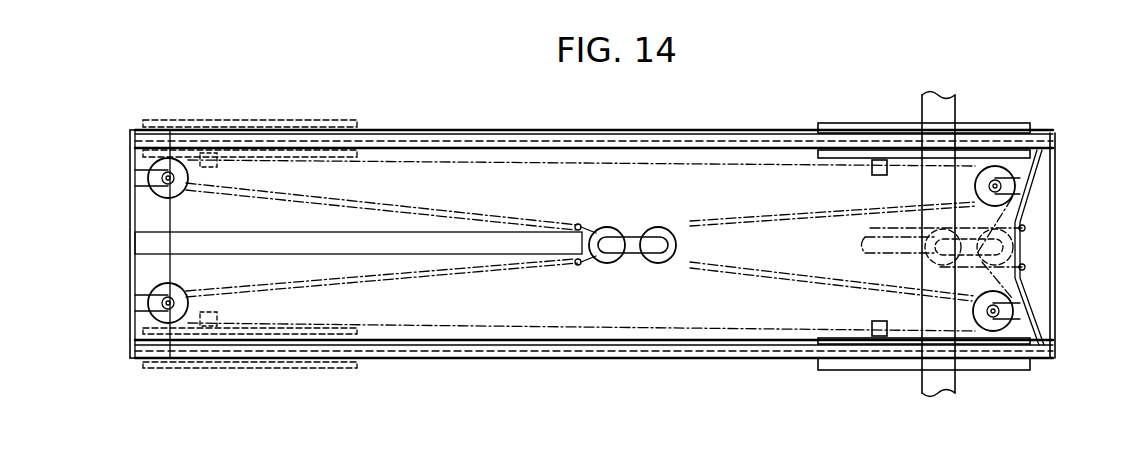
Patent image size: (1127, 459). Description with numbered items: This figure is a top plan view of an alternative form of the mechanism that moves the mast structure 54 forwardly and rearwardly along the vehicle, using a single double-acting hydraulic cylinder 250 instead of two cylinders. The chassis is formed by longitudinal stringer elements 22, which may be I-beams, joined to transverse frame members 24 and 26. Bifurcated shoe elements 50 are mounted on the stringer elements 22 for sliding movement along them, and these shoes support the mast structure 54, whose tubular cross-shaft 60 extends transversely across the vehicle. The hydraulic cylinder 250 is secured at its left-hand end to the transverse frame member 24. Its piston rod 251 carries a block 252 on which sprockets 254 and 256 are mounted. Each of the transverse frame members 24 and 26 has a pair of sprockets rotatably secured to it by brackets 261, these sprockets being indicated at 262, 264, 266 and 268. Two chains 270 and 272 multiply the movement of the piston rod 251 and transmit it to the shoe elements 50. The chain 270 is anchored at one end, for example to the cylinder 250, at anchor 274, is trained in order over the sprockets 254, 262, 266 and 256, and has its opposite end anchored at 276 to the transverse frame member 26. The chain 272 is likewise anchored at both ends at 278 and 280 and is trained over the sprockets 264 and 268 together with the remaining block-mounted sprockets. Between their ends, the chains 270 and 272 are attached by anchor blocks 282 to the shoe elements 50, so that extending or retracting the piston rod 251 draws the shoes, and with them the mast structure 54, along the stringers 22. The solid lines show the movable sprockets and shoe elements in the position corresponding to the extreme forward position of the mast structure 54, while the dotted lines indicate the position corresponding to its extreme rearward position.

The longitudinal stringer element 22 is at (385, 130).
The transverse frame member 24 is at (135, 211).
The transverse frame member 26 is at (1035, 295).
The bifurcated shoe element 50 is at (192, 120).
The mast structure 54 is at (942, 406).
The tubular cross-shaft 60 is at (958, 382).
The double-acting hydraulic cylinder 250 is at (372, 218).
The piston rod 251 is at (582, 245).
The block 252 is at (632, 258).
The sprocket 254 is at (612, 230).
The sprocket 256 is at (660, 228).
The bracket 261 is at (145, 178).
The sprocket 262 is at (185, 194).
The sprocket 264 is at (185, 290).
The sprocket 266 is at (1010, 172).
The sprocket 268 is at (1008, 326).
The chain 270 is at (440, 162).
The chain 272 is at (420, 274).
The anchor 274 is at (576, 266).
The anchor 276 is at (1025, 267).
The anchor 278 is at (576, 224).
The anchor 280 is at (1025, 227).
The anchor block 282 is at (220, 168).